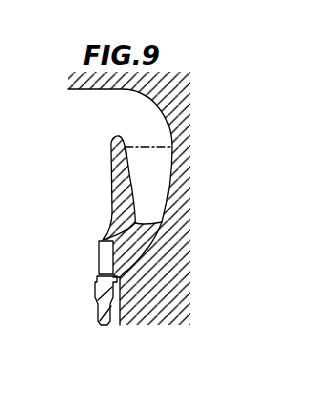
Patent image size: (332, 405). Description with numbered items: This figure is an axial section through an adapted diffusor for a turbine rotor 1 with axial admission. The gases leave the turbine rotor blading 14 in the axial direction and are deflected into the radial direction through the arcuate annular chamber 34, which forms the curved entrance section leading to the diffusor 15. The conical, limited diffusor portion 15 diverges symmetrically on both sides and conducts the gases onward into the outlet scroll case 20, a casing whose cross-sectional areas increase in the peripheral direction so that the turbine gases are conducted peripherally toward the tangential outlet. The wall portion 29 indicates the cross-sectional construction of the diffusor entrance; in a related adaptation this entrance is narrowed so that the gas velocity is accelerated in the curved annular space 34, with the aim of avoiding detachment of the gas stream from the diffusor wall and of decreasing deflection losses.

The outlet scroll case 20 is at (130, 108).
The diffusor 15 is at (138, 168).
The wall portion 29 is at (165, 221).
The turbine rotor blading 14 is at (118, 257).
The arcuate annular chamber 34 is at (119, 256).
The turbine rotor 1 is at (101, 288).